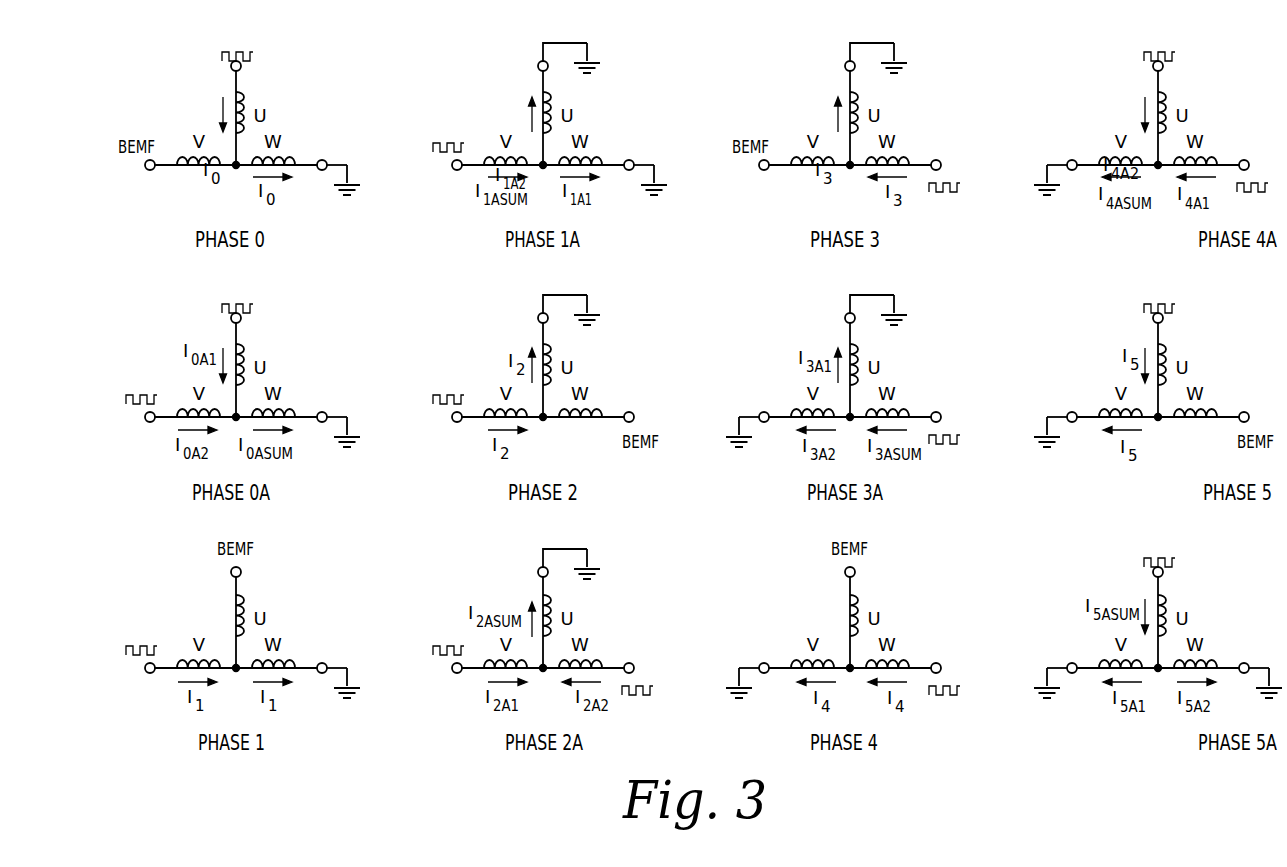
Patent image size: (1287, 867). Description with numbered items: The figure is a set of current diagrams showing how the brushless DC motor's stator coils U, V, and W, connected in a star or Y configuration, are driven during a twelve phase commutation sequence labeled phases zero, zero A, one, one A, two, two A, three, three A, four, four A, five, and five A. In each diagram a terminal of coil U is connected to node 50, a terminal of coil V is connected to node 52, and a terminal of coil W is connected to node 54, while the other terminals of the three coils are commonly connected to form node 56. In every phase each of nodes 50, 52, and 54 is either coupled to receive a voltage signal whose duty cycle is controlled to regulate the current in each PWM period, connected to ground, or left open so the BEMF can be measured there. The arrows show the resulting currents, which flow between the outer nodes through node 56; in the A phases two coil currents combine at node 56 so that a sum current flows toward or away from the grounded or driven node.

The node 50 is at (675, 318).
The node 52 is at (604, 426).
The node 54 is at (799, 402).
The node 56 is at (699, 459).